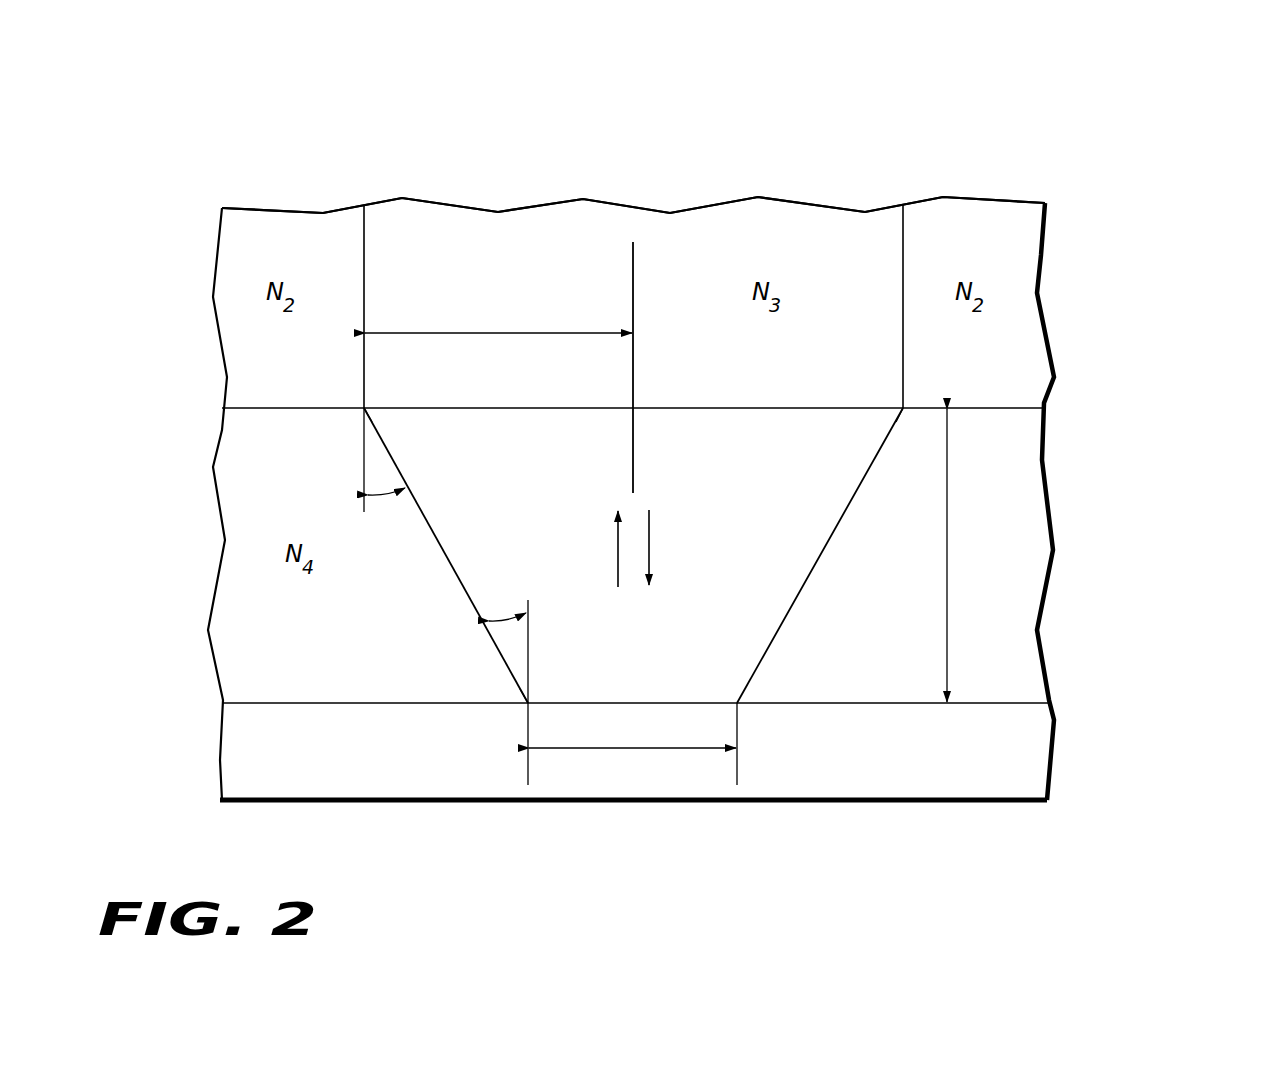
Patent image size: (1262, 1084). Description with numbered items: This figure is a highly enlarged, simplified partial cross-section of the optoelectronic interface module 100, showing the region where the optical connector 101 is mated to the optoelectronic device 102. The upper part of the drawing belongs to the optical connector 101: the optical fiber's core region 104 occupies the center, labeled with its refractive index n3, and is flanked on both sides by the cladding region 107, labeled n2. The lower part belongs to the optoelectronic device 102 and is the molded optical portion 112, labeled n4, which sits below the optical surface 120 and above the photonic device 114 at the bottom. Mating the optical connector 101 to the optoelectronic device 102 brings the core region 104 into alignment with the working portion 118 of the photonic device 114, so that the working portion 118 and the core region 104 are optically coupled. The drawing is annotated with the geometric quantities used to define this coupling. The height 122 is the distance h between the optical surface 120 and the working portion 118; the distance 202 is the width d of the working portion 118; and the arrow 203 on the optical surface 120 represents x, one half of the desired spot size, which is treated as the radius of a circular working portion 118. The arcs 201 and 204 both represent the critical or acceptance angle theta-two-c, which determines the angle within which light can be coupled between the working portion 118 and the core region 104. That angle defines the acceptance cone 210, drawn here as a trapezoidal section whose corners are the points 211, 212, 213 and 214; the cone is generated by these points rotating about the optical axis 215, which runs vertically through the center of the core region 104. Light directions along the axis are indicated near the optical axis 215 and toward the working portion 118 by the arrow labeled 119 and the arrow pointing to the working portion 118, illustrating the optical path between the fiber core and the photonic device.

The optoelectronic interface module 100 is at (1117, 150).
The optical connector 101 is at (1065, 282).
The optoelectronic device 102 is at (1070, 465).
The core region 104 is at (632, 207).
The cladding region 107 is at (298, 212).
The molded optical portion 112 is at (220, 572).
The photonic device 114 is at (848, 804).
The working portion 118 is at (650, 660).
The optical axis directions 119 is at (620, 547).
The optical surface 120 is at (290, 410).
The height 122 is at (947, 557).
The arc 201 is at (502, 613).
The distance 202 is at (662, 748).
The arrow 203 is at (512, 332).
The arc 204 is at (386, 494).
The acceptance cone 210 is at (417, 580).
The point 211 is at (362, 408).
The point 212 is at (527, 700).
The point 213 is at (745, 690).
The point 214 is at (904, 410).
The optical axis 215 is at (635, 378).